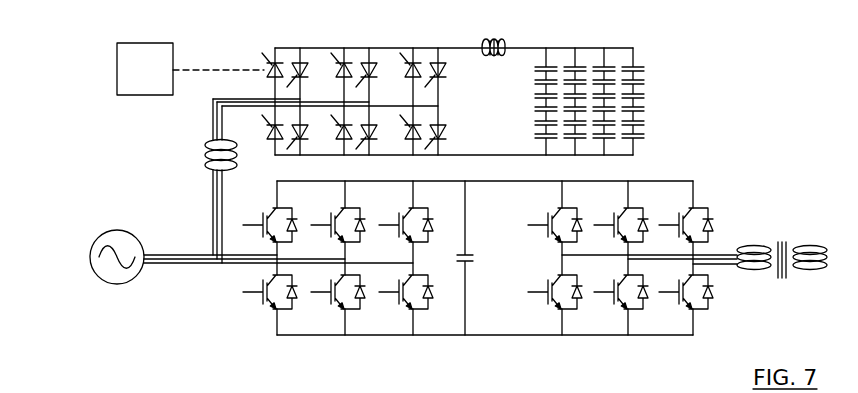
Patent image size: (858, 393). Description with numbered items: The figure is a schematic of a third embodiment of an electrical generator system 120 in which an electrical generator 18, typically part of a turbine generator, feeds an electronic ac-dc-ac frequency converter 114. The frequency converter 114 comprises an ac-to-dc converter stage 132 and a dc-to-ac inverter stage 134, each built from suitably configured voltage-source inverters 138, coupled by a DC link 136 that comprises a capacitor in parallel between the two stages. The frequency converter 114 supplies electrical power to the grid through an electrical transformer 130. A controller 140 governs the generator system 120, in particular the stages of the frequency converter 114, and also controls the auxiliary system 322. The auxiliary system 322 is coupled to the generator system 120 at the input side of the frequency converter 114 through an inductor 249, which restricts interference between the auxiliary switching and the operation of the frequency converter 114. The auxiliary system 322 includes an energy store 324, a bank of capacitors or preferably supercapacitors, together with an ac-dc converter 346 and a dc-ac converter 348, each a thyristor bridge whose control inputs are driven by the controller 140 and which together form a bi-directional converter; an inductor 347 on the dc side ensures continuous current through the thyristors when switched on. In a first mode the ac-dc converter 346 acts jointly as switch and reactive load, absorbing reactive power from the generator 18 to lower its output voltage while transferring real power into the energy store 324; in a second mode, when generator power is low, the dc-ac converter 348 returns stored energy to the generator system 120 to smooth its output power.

The electrical generator 18 is at (108, 278).
The frequency converter 114 is at (273, 323).
The generator system 120 is at (706, 190).
The electrical transformer 130 is at (810, 242).
The ac-to-dc converter stage 132 is at (325, 337).
The dc-to-ac inverter stage 134 is at (620, 337).
The DC link 136 is at (463, 318).
The voltage-source inverter 138 is at (560, 310).
The controller 140 is at (133, 81).
The inductor 249 is at (205, 155).
The auxiliary system 322 is at (648, 50).
The energy store 324 is at (648, 100).
The ac-dc converter 346 is at (276, 48).
The inductor 347 is at (490, 40).
The dc-ac converter 348 is at (371, 56).